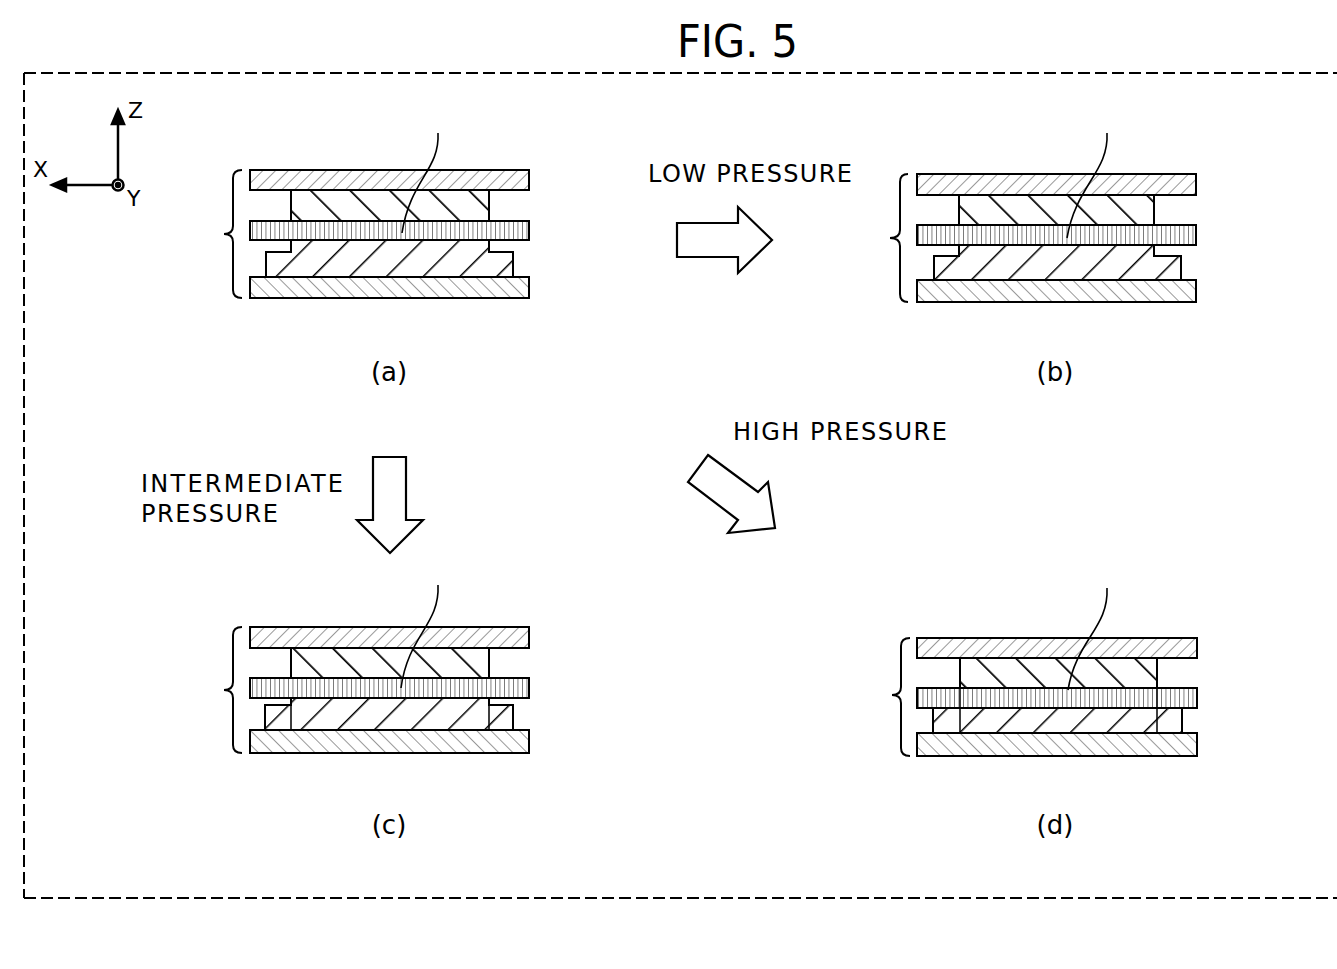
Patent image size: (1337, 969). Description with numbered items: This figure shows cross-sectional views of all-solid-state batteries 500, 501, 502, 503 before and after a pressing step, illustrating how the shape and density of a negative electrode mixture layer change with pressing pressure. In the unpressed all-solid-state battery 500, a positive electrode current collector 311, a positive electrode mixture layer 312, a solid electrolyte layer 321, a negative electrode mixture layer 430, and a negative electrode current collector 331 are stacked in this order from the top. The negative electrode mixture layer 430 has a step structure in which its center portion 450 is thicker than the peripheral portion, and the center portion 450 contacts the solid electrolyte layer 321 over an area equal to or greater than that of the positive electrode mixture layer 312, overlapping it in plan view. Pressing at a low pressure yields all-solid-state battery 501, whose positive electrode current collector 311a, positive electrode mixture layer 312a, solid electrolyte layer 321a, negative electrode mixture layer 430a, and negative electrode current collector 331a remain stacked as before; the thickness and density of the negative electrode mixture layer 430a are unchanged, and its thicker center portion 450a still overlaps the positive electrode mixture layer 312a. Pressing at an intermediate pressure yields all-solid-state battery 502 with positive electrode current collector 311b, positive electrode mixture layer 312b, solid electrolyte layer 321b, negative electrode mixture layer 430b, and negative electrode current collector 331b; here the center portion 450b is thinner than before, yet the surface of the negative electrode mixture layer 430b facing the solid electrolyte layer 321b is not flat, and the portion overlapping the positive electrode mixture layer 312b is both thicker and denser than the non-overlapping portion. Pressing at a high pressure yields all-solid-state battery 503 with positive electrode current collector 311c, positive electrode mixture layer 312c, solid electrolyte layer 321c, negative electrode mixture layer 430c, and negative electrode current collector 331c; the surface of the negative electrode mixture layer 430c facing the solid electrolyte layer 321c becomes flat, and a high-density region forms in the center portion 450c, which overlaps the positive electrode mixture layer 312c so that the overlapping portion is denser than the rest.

The all-solid-state battery 500 is at (202, 234).
The all-solid-state battery 501 is at (867, 238).
The all-solid-state battery 502 is at (202, 690).
The all-solid-state battery 503 is at (868, 697).
The positive electrode current collector 311 is at (478, 182).
The positive electrode mixture layer 312 is at (467, 205).
The solid electrolyte layer 321 is at (510, 232).
The negative electrode mixture layer 430 is at (505, 260).
The negative electrode current collector 331 is at (498, 288).
The center portion 450 is at (432, 167).
The first substrate (low pressure) 311a is at (1143, 187).
The positive electrode mixture layer 312a is at (1128, 207).
The intermediate layer (low pressure) 321a is at (1173, 236).
The negative electrode mixture layer 430a is at (1170, 263).
The second substrate (low pressure) 331a is at (1163, 292).
The center portion 450a is at (1100, 169).
The first substrate (intermediate pressure) 311b is at (478, 636).
The positive electrode mixture layer 312b is at (467, 660).
The solid electrolyte layer 321b is at (510, 688).
The negative electrode mixture layer 430b is at (505, 713).
The second substrate (intermediate pressure) 331b is at (498, 742).
The center portion 450b is at (434, 622).
The first substrate (high pressure) 311c is at (1143, 650).
The positive electrode mixture layer 312c is at (1133, 680).
The solid electrolyte layer 321c is at (1180, 700).
The negative electrode mixture layer 430c is at (1172, 718).
The second substrate (high pressure) 331c is at (1165, 745).
The center portion 450c is at (1100, 623).